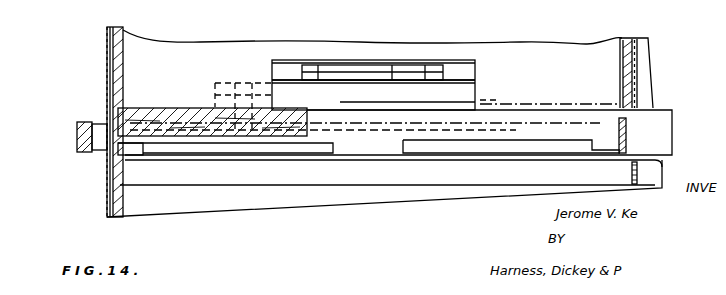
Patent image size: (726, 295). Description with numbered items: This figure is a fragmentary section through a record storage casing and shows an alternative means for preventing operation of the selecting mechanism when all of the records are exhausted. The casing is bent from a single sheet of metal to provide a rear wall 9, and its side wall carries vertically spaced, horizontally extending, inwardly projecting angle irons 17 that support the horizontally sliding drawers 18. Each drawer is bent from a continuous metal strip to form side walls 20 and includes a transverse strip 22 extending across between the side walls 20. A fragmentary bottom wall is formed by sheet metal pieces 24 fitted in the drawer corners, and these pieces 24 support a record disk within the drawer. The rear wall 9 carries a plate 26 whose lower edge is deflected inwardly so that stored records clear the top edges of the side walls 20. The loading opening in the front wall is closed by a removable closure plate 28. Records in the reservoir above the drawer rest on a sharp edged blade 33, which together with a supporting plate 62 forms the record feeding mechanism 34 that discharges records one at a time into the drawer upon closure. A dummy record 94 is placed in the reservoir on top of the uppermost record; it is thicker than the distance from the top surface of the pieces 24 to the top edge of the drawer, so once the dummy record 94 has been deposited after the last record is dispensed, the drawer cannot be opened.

The rear wall 9 is at (640, 79).
The angle irons 17 is at (266, 183).
The drawers 18 is at (100, 158).
The side walls 20 is at (679, 137).
The transverse strip 22 is at (628, 133).
The sheet metal pieces 24 is at (155, 145).
The plate 26 is at (637, 102).
The closure plate 28 is at (123, 31).
The blade 33 is at (418, 68).
The record feeding mechanism 34 is at (373, 52).
The supporting plate 62 is at (326, 80).
The dummy record 94 is at (147, 100).